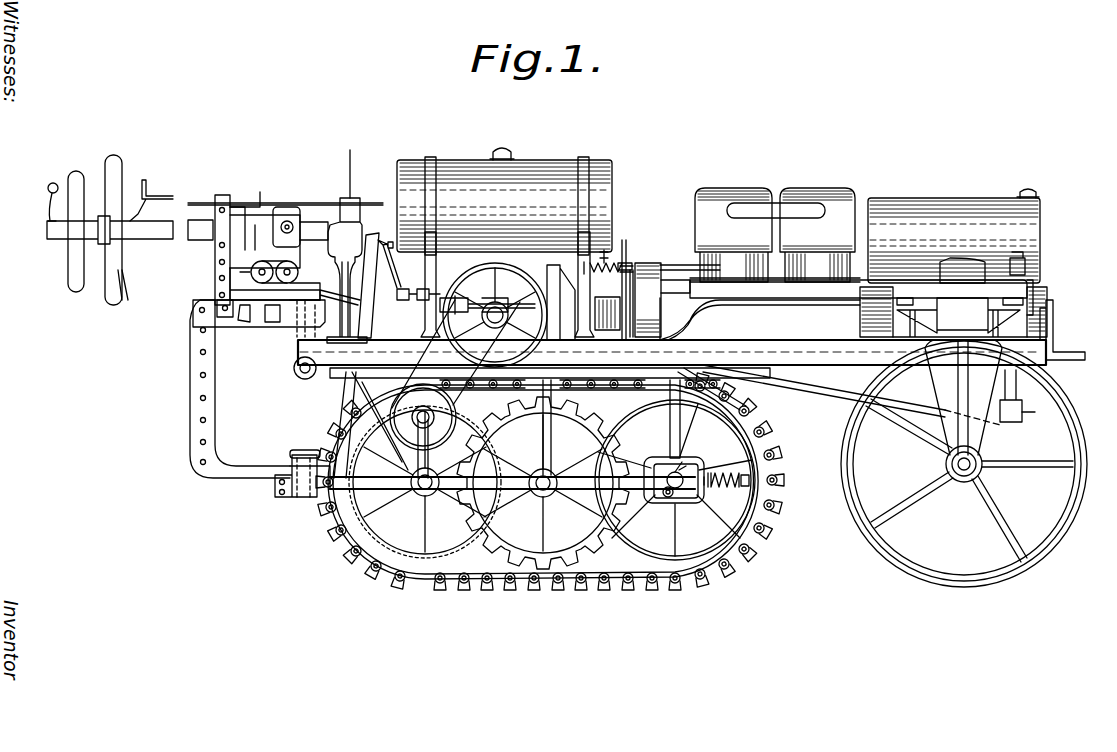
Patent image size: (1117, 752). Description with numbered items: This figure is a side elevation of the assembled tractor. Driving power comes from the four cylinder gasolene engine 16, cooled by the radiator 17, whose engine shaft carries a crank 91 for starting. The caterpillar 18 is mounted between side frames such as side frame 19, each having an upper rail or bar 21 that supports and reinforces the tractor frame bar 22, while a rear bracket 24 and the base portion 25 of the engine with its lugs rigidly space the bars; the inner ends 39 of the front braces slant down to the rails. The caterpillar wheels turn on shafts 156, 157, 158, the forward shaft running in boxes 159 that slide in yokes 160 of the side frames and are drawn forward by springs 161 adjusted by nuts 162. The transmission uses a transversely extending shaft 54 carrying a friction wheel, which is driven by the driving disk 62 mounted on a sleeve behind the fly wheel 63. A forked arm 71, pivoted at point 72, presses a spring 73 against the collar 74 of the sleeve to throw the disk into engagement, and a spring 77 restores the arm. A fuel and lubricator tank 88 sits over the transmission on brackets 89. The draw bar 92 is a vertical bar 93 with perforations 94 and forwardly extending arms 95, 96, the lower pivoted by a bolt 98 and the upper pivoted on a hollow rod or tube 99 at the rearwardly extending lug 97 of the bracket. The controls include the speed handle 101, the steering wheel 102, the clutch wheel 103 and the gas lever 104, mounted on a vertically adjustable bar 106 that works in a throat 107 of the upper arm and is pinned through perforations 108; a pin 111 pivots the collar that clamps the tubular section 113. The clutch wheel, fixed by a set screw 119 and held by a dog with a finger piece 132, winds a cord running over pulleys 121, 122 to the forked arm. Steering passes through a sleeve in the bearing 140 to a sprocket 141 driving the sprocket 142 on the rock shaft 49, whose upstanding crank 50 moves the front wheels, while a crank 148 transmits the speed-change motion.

The four cylinder gasolene engine 16 is at (773, 185).
The radiator 17 is at (937, 195).
The caterpillar 18 is at (484, 605).
The side frame 19 is at (336, 416).
The rail or bar 21 is at (570, 400).
The tractor frame bar 22 is at (800, 345).
The bracket 24 is at (305, 343).
The base portion of the engine 25 is at (852, 335).
The inner ends of braces 39 is at (680, 312).
The rock shaft 49 is at (905, 410).
The upstanding crank 50 is at (1005, 390).
The transversely extending shaft 54 is at (500, 310).
The driving disk 62 is at (553, 265).
The fly wheel 63 is at (648, 265).
The forked arm 71 is at (630, 262).
The pivot point 72 is at (720, 298).
The spring 73 is at (690, 305).
The collar 74 is at (598, 380).
The spring 77 is at (610, 255).
The fuel and lubricator tank 88 is at (462, 175).
The brackets 89 is at (430, 262).
The crank 91 is at (1085, 342).
The draw bar 92 is at (181, 434).
The vertical bar 93 is at (200, 386).
The perforations 94 is at (200, 448).
The forwardly extending arm 95 is at (243, 470).
The forwardly extending arm 96 is at (262, 300).
The rearwardly extending lug 97 is at (215, 318).
The bolt 98 is at (300, 498).
The hollow rod or tube 99 is at (324, 320).
The handle 101 is at (46, 192).
The steering wheel 102 is at (75, 178).
The clutch wheel 103 is at (118, 170).
The lever 104 is at (146, 190).
The vertically adjustable bar 106 is at (215, 288).
The throat 107 is at (215, 310).
The perforations 108 is at (215, 275).
The pin 111 is at (226, 182).
The tubular section 113 is at (160, 238).
The set screw 119 is at (1022, 414).
The pulley 121 is at (555, 350).
The pulley 122 is at (308, 380).
The finger piece 132 is at (122, 298).
The bearing 140 is at (332, 205).
The sprocket 141 is at (353, 195).
The sprocket 142 is at (374, 328).
The crank 148 is at (388, 242).
The forward shaft 156 is at (685, 490).
The shaft 157 is at (543, 500).
The shaft 158 is at (422, 500).
The boxes 159 is at (666, 496).
The yokes 160 is at (700, 465).
The springs 161 is at (720, 492).
The nuts 162 is at (745, 487).